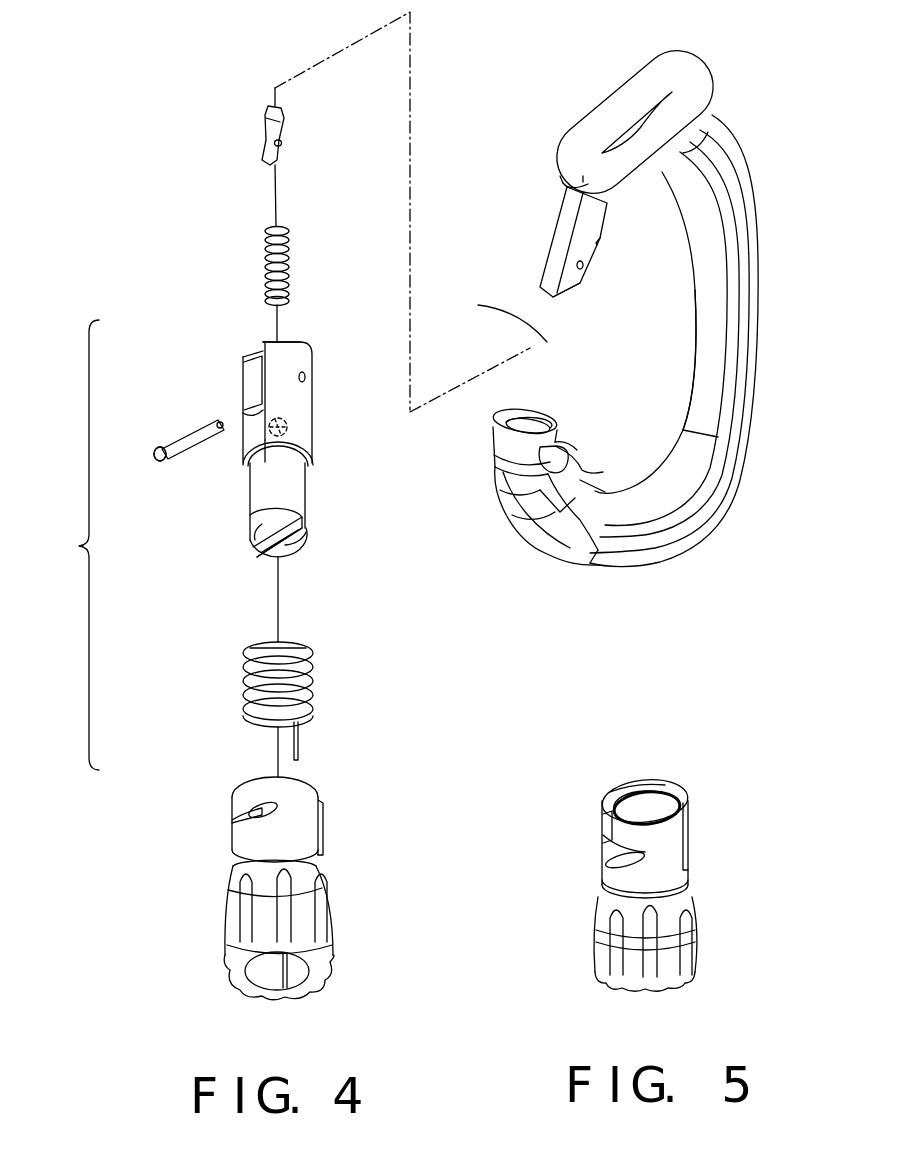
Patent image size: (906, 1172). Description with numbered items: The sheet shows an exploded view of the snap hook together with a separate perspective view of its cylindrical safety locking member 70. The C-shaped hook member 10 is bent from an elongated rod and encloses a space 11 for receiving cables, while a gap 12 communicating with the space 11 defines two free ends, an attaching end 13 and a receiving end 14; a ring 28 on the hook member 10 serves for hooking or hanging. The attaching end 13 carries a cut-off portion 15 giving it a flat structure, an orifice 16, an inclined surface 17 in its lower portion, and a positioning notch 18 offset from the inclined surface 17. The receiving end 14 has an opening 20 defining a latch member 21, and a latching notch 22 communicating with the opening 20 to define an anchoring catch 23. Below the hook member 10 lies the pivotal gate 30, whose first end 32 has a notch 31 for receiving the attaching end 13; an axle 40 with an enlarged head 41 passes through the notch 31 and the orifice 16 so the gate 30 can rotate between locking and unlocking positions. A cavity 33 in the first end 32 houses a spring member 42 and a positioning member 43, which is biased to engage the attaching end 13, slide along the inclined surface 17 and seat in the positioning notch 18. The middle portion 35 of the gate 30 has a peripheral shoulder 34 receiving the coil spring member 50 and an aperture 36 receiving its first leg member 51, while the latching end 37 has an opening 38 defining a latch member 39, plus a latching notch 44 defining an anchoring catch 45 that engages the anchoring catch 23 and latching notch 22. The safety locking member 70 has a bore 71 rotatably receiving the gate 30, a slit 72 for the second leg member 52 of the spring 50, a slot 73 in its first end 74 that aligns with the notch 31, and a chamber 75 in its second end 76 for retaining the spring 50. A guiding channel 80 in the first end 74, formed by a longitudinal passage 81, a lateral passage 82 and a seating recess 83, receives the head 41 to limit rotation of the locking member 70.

In FIG. 5, the C-shaped hook member 10 is at (727, 142).
In FIG. 5, the space 11 is at (680, 328).
In FIG. 5, the gap 12 is at (494, 312).
In FIG. 5, the attaching end 13 is at (569, 233).
In FIG. 5, the receiving end 14 is at (497, 444).
In FIG. 5, the cut-off portion 15 is at (575, 205).
In FIG. 5, the orifice 16 is at (585, 265).
In FIG. 5, the inclined surface 17 is at (586, 278).
In FIG. 5, the positioning notch 18 is at (600, 232).
In FIG. 5, the opening 20 is at (557, 435).
In FIG. 5, the latch member 21 is at (518, 420).
In FIG. 5, the latching notch 22 is at (562, 473).
In FIG. 5, the anchoring catch 23 is at (558, 440).
In FIG. 5, the ring 28 is at (633, 120).
In FIG. 4, the pivotal gate 30 is at (276, 387).
In FIG. 4, the notch 31 is at (247, 368).
In FIG. 4, the first end 32 is at (303, 342).
In FIG. 4, the cavity 33 is at (288, 420).
In FIG. 4, the peripheral shoulder 34 is at (258, 455).
In FIG. 4, the middle portion 35 is at (312, 445).
In FIG. 4, the aperture 36 is at (300, 458).
In FIG. 4, the latching end 37 is at (258, 498).
In FIG. 4, the opening 38 is at (258, 528).
In FIG. 4, the latch member 39 is at (308, 545).
In FIG. 4, the axle 40 is at (195, 437).
In FIG. 4, the head 41 is at (155, 452).
In FIG. 4, the spring member 42 is at (262, 240).
In FIG. 4, the positioning member 43 is at (265, 148).
In FIG. 4, the latching notch 44 is at (305, 520).
In FIG. 4, the anchoring catch 45 is at (258, 548).
In FIG. 4, the coil spring member 50 is at (314, 668).
In FIG. 4, the first leg member 51 is at (268, 642).
In FIG. 4, the second leg member 52 is at (300, 745).
In FIG. 4, the safety locking member 70 is at (320, 865).
In FIG. 5, the safety locking member 70 is at (645, 875).
In FIG. 5, the bore 71 is at (655, 798).
In FIG. 4, the slit 72 is at (290, 978).
In FIG. 4, the slot 73 is at (322, 825).
In FIG. 5, the slot 73 is at (690, 808).
In FIG. 4, the first end 74 is at (320, 790).
In FIG. 5, the first end 74 is at (682, 790).
In FIG. 4, the chamber 75 is at (262, 972).
In FIG. 4, the second end 76 is at (225, 953).
In FIG. 5, the second end 76 is at (628, 990).
In FIG. 4, the guiding channel 80 is at (228, 828).
In FIG. 5, the guiding channel 80 is at (604, 800).
In FIG. 5, the longitudinal passage 81 is at (605, 817).
In FIG. 4, the lateral passage 82 is at (255, 805).
In FIG. 5, the lateral passage 82 is at (612, 860).
In FIG. 5, the seating recess 83 is at (617, 790).